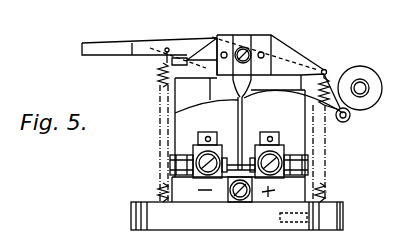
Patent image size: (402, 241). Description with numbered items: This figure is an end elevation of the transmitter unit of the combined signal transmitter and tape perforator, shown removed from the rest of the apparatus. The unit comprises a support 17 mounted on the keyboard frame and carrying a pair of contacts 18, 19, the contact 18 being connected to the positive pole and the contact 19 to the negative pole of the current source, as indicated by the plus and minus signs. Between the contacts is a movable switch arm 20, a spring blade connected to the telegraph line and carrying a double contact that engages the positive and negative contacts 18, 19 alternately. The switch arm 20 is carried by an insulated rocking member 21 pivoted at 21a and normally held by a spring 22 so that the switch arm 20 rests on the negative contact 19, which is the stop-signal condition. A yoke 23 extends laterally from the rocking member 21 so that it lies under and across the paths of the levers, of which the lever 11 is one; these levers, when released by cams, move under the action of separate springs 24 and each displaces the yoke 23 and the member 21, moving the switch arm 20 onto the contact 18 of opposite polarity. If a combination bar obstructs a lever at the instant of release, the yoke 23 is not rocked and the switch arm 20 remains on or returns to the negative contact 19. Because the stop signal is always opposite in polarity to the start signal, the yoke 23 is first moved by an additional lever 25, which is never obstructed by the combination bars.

The lever 11 is at (88, 48).
The yoke 23 is at (165, 49).
The lever 25 is at (182, 50).
The rocking member 21 is at (284, 58).
The pivot 21a is at (240, 48).
The movable switch arm 20 is at (243, 112).
The spring 22 is at (320, 150).
The spring 24 is at (157, 127).
The contact 19 is at (225, 152).
The contact 18 is at (249, 153).
The support 17 is at (333, 204).